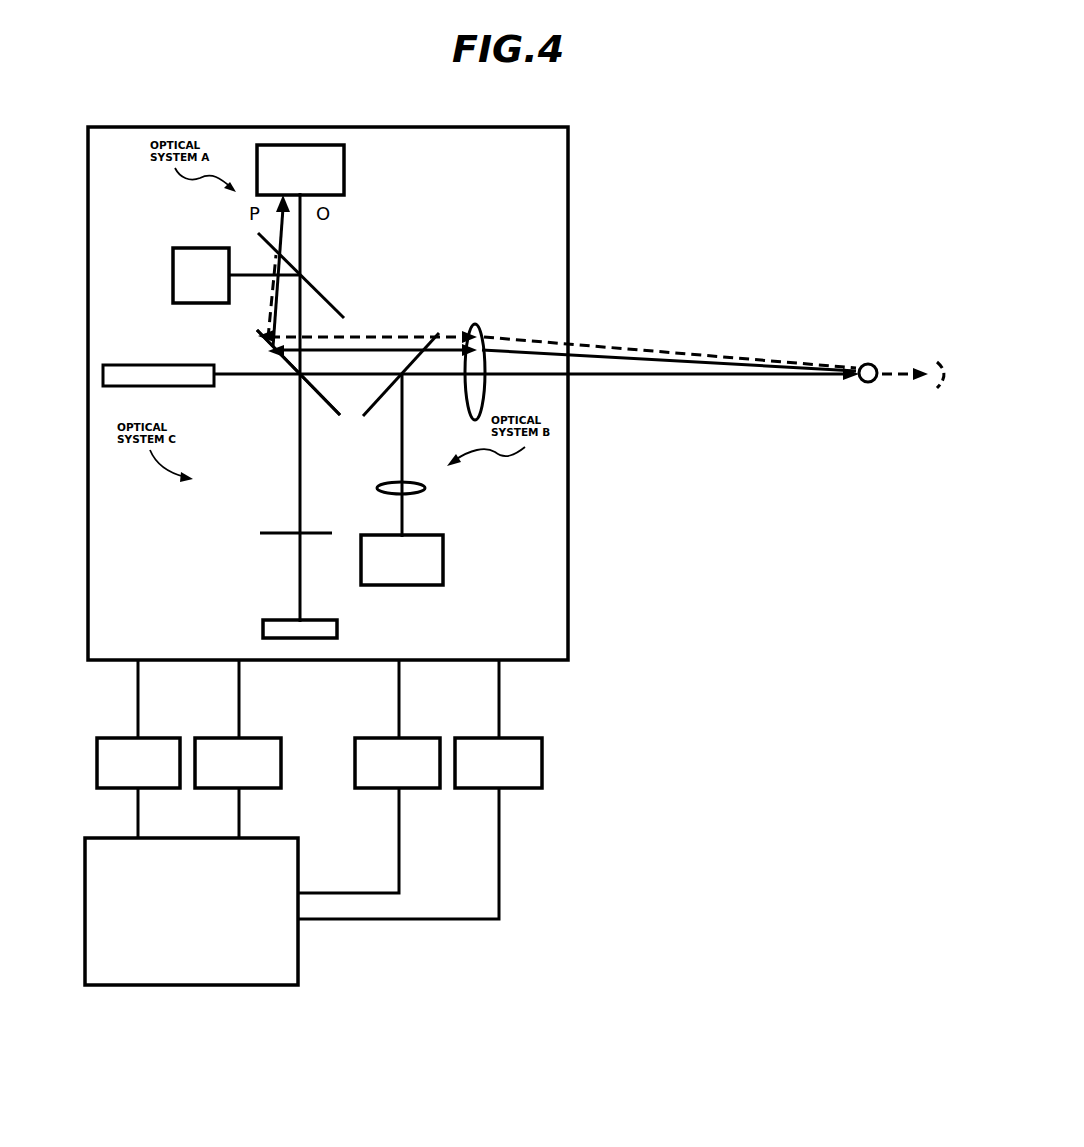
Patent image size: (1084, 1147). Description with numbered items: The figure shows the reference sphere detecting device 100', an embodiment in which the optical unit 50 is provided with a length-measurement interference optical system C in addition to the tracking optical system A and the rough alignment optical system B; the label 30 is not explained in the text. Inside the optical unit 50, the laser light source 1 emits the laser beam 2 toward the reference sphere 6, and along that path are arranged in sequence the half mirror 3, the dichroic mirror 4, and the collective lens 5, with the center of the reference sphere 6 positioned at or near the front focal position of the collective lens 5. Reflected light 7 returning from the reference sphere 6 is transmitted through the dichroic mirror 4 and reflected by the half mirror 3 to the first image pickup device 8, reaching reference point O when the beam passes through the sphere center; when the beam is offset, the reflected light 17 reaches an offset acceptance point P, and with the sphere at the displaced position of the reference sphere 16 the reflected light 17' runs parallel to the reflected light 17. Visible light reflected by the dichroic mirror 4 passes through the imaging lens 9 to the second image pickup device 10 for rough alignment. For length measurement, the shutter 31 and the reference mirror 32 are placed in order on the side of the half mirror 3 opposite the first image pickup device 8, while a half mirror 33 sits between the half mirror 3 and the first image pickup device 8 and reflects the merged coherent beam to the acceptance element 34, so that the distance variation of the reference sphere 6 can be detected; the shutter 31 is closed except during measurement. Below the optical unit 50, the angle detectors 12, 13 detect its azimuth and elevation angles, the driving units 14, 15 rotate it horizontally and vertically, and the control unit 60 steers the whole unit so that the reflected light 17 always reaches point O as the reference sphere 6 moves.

The laser light source 1 is at (151, 364).
The laser beam 2 is at (249, 373).
The half mirror 3 is at (328, 408).
The dichroic mirror 4 is at (410, 358).
The collective lens 5 is at (480, 325).
The reference sphere 6 is at (868, 363).
The reflected light 7 is at (692, 378).
The first image pickup device 8 is at (344, 165).
The imaging lens 9 is at (425, 488).
The second image pickup device 10 is at (443, 560).
The angle detector 12 is at (118, 790).
The angle detector 13 is at (217, 790).
The driving unit 14 is at (369, 790).
The driving unit 15 is at (471, 790).
The reference sphere 16 is at (937, 358).
The reflected light 17 is at (562, 327).
The reflected light 17' is at (593, 328).
The optical system A 30 is at (135, 196).
The shutter 31 is at (280, 532).
The reference mirror 32 is at (263, 628).
The half mirror 33 is at (324, 293).
The acceptance element 34 is at (190, 248).
The optical unit 50 is at (568, 176).
The control unit 60 is at (298, 963).
The reference sphere detecting device 100' is at (776, 155).